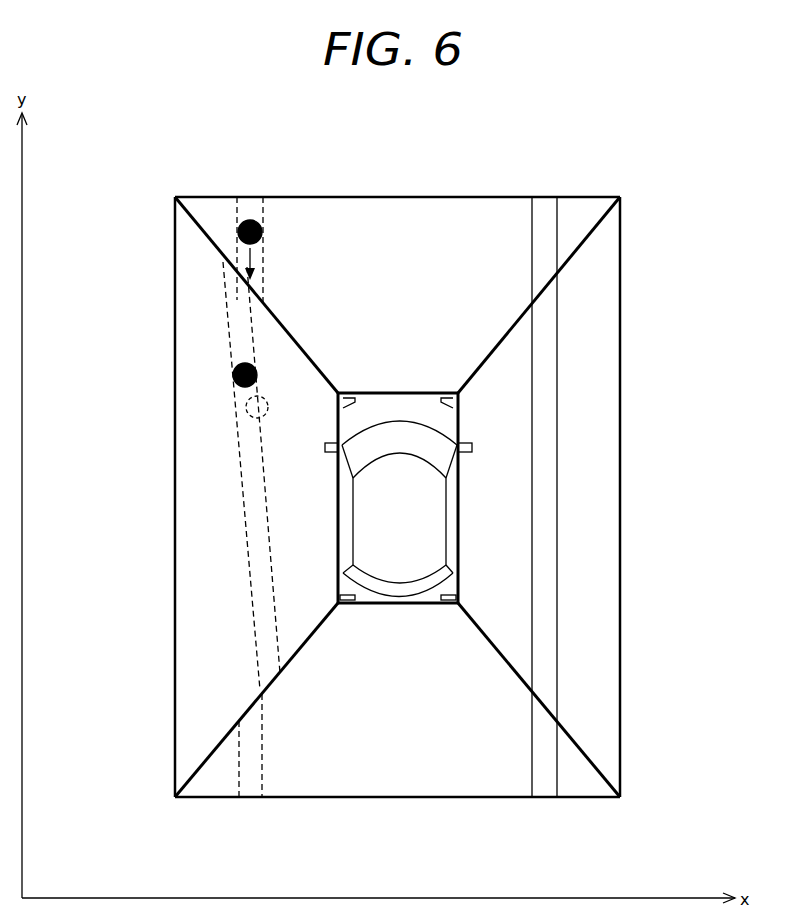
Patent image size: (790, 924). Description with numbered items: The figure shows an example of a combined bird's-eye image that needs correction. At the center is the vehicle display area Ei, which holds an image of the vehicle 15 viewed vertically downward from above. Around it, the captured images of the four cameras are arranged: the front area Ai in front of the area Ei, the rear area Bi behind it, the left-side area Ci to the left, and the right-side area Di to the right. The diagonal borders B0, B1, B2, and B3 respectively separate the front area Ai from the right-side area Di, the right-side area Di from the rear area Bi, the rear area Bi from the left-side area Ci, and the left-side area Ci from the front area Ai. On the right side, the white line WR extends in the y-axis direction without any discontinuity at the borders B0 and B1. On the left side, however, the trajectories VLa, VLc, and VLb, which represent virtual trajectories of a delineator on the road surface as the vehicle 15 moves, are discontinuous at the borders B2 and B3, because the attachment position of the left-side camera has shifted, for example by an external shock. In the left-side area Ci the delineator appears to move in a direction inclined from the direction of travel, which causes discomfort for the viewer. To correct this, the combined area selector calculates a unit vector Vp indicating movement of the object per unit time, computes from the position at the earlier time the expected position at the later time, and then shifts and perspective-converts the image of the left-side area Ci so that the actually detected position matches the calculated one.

The front area Ai is at (408, 228).
The rear area Bi is at (404, 765).
The left-side area Ci is at (190, 517).
The right-side area Di is at (588, 524).
The border B0 is at (588, 238).
The border B1 is at (593, 758).
The border B2 is at (197, 769).
The border B3 is at (206, 236).
The white line WR is at (558, 465).
The trajectory VLa is at (265, 197).
The trajectory VLb is at (267, 749).
The trajectory VLc is at (248, 563).
The unit vector Vp is at (256, 265).
The vehicle 15 is at (418, 393).
The vehicle display area Ei is at (410, 522).